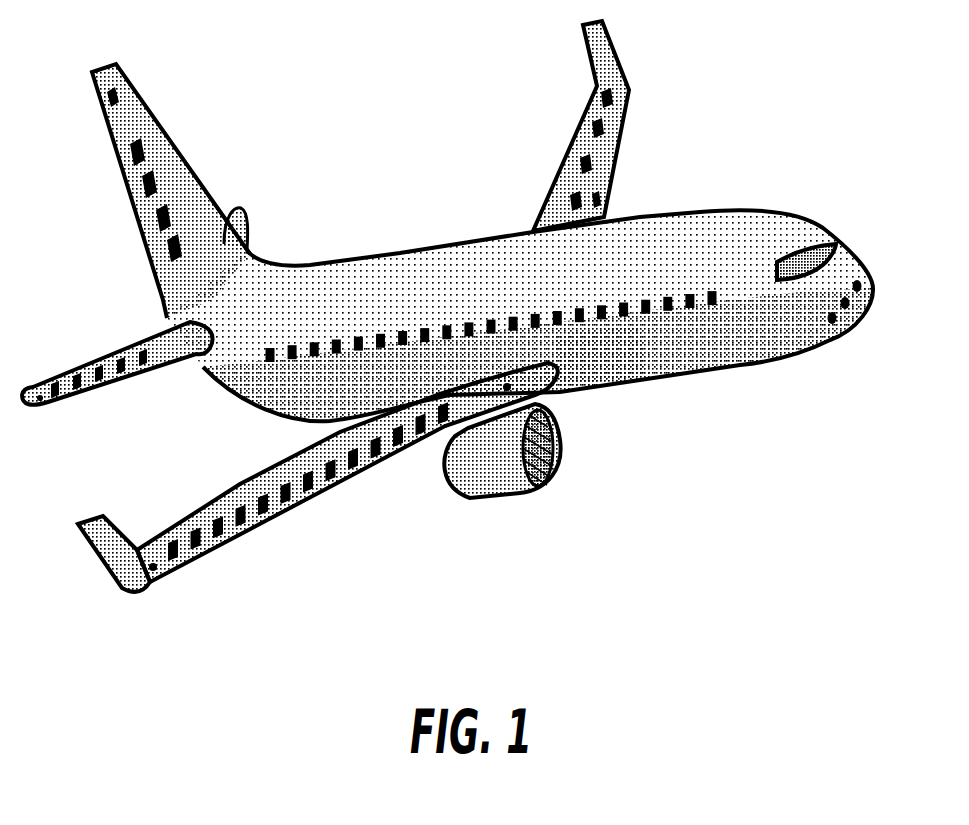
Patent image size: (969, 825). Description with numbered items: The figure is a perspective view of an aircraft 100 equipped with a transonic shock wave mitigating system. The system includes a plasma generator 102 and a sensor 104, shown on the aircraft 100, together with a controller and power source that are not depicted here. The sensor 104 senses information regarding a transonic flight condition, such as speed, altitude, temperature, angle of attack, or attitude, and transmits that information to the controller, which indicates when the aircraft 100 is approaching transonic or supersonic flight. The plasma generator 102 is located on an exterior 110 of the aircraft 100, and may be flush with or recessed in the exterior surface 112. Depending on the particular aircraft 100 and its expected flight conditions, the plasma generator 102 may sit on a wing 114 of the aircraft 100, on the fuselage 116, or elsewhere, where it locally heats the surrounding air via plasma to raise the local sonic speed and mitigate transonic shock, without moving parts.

The aircraft 100 is at (643, 414).
The plasma generator 102 is at (633, 162).
The sensor 104 is at (835, 345).
The exterior 110 is at (278, 258).
The exterior surface 112 is at (410, 273).
The wing 114 is at (338, 498).
The fuselage 116 is at (232, 382).